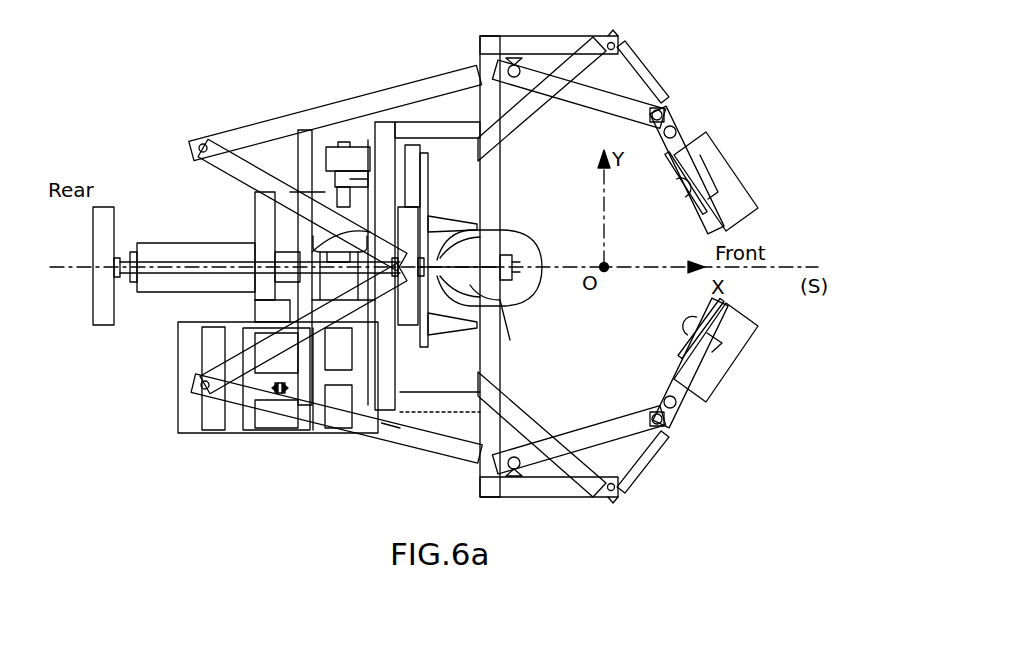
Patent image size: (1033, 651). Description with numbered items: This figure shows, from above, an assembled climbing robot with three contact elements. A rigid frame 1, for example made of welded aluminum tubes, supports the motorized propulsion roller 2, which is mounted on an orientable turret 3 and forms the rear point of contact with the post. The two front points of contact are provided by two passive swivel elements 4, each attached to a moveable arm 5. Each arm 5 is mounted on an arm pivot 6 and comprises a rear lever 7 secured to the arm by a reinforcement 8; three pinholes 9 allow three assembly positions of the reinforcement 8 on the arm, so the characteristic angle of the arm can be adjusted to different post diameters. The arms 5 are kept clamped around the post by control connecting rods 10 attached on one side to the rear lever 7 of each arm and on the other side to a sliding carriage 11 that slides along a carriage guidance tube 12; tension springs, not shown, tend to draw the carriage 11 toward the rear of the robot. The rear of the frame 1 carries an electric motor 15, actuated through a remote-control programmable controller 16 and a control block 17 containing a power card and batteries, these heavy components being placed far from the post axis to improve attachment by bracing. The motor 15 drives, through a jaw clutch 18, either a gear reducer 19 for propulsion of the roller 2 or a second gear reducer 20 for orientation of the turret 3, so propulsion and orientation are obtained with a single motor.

The frame 1 is at (500, 162).
The propulsion roller 2 is at (535, 253).
The orientable turret 3 is at (510, 342).
The passive contact element with swivel element 4 is at (672, 190).
The moveable arm 5 is at (688, 133).
The arm pivot 6 is at (613, 37).
The rear lever of the arm 7 is at (233, 138).
The reinforcement for a moveable arm 8 is at (583, 95).
The pinhole for adjusting the opening of the arms 9 is at (663, 107).
The control connecting rod 10 is at (237, 187).
The sliding carriage 11 is at (383, 423).
The carriage guidance tube 12 is at (133, 268).
The electric motor 15 is at (181, 243).
The remote-control programmable controller 16 is at (272, 420).
The control block 17 is at (182, 415).
The jaw clutch 18 is at (345, 330).
The gear reducer for propulsion of the roller 19 is at (472, 308).
The gear reducer for orientation of the turret 20 is at (320, 168).